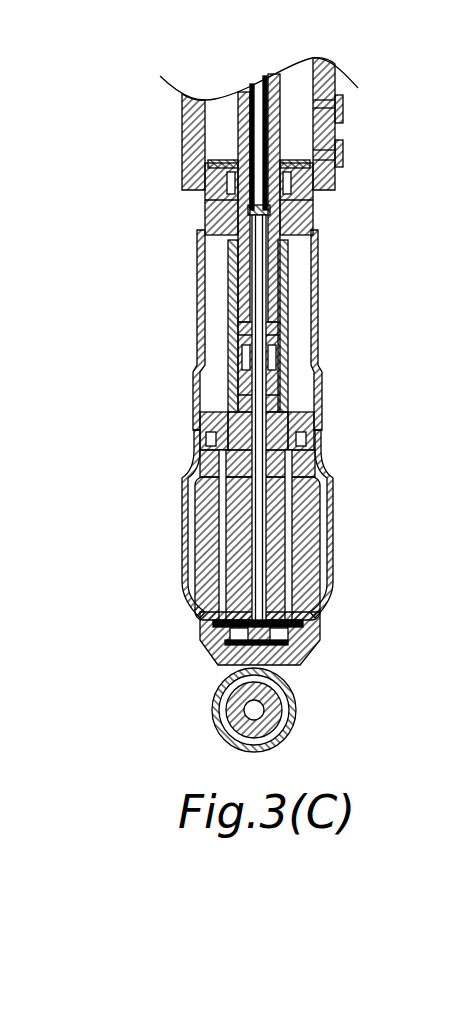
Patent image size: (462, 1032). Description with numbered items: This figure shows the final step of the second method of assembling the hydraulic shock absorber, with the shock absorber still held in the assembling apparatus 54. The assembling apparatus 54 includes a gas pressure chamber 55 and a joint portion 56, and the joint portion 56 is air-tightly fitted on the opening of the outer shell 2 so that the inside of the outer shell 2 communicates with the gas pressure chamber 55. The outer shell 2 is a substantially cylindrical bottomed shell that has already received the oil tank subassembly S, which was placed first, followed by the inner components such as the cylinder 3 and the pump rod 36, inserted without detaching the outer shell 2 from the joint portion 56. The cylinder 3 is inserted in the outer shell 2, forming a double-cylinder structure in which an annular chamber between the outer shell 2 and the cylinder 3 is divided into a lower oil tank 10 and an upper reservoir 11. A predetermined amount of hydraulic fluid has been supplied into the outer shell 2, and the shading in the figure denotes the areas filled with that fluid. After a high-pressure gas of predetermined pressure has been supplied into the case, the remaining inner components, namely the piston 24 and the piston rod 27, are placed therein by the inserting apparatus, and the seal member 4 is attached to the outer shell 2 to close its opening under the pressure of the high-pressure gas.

The assembling apparatus 54 is at (333, 64).
The gas pressure chamber 55 is at (297, 70).
The piston rod 27 is at (236, 97).
The joint portion 56 is at (182, 147).
The seal member 4 is at (337, 168).
The outer shell 2 is at (318, 294).
The reservoir 11 is at (212, 333).
The piston 24 is at (290, 382).
The cylinder 3 is at (320, 397).
The pump rod 36 is at (292, 486).
The oil tank subassembly S is at (326, 502).
The oil tank 10 is at (304, 566).